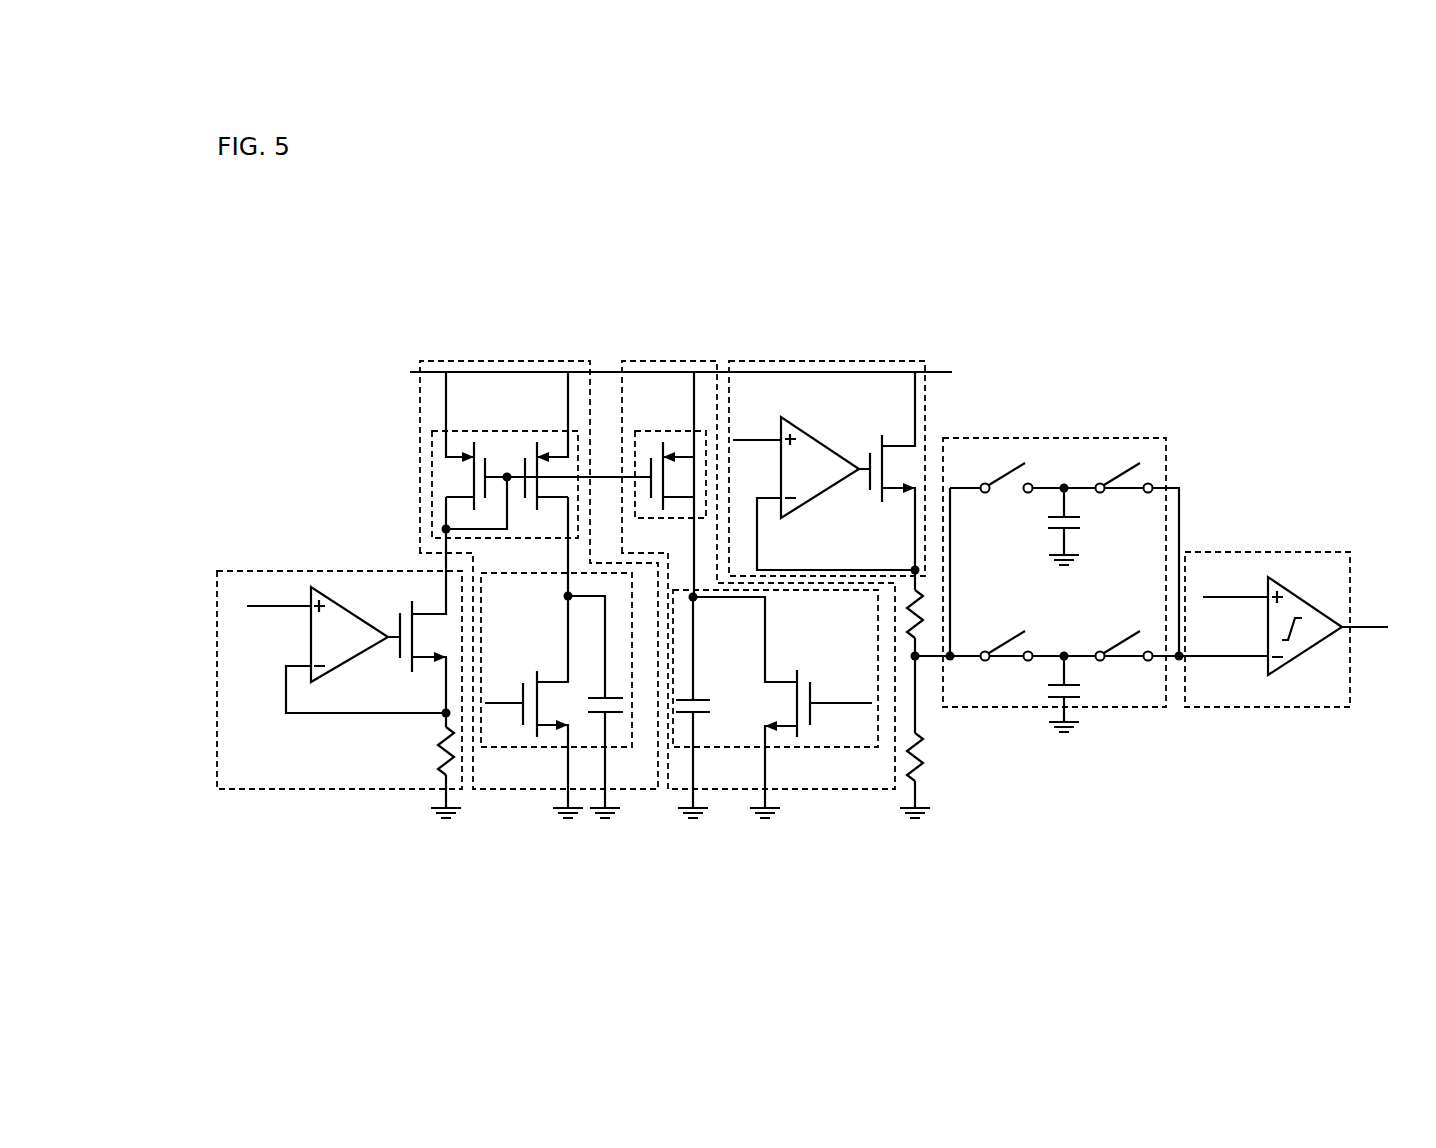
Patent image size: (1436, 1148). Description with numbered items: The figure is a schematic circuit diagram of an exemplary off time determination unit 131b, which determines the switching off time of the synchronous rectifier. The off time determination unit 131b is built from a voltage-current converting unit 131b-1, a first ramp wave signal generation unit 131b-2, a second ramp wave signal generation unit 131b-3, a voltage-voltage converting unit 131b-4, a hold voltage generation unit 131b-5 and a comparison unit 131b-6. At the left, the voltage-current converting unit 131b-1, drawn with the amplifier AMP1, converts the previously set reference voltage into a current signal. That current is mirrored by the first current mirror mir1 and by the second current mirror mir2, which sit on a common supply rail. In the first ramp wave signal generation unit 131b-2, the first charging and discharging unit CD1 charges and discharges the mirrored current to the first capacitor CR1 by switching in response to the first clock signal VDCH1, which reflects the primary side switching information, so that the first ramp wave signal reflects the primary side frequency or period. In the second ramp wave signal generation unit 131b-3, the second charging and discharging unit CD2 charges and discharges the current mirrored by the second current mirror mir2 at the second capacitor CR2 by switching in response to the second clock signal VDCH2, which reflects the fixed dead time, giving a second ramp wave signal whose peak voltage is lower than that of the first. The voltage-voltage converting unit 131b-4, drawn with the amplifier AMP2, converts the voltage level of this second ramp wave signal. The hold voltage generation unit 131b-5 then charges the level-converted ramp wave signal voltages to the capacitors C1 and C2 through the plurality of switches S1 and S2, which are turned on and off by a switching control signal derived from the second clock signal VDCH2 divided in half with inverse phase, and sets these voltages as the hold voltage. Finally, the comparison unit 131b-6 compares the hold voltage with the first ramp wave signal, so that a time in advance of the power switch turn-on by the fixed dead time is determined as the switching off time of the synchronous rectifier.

The off time determination unit 131b is at (282, 260).
The voltage-current converting unit 131b-1 is at (286, 571).
The first ramp wave signal generation unit 131b-2 is at (521, 361).
The second ramp wave signal generation unit 131b-3 is at (704, 361).
The voltage-voltage converting unit 131b-4 is at (816, 361).
The hold voltage generation unit 131b-5 is at (1060, 438).
The comparison unit 131b-6 is at (1267, 552).
The first current mirror mir1 is at (432, 459).
The second current mirror mir2 is at (640, 431).
The first charging and discharging unit CD1 is at (523, 747).
The second charging and discharging unit CD2 is at (825, 747).
The amplifier 1 AMP1 is at (349, 646).
The amplifier 2 AMP2 is at (820, 456).
The first clock signal VDCH1 is at (540, 657).
The second clock signal VDCH2 is at (782, 704).
The first capacitor CR1 is at (614, 707).
The second capacitor CR2 is at (710, 707).
The switch S1 is at (1065, 547).
The switch S2 is at (1065, 547).
The capacitor C1 is at (1081, 525).
The capacitor C2 is at (1082, 692).